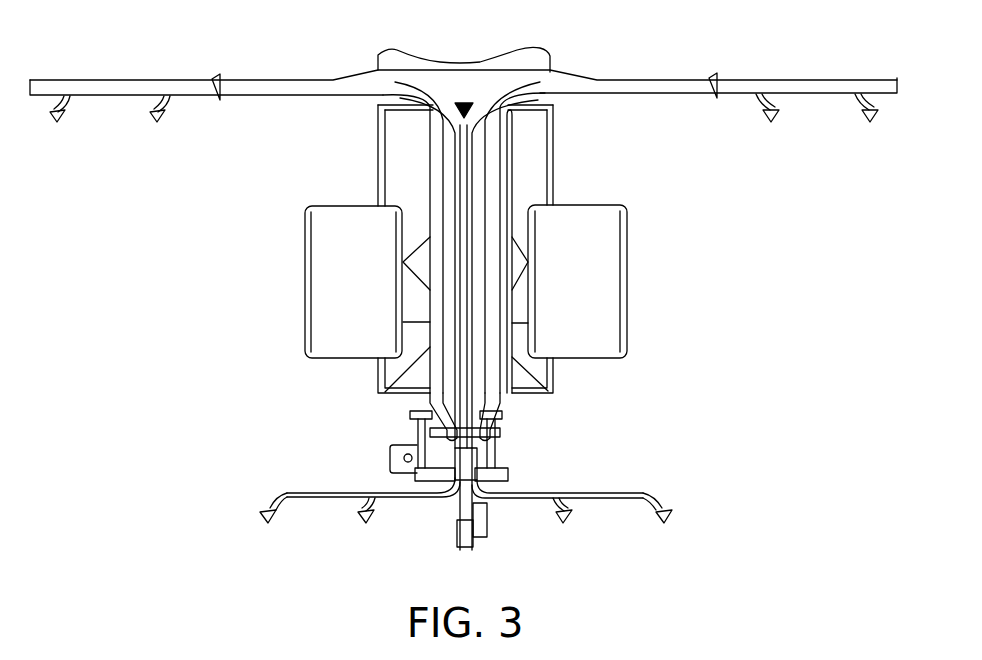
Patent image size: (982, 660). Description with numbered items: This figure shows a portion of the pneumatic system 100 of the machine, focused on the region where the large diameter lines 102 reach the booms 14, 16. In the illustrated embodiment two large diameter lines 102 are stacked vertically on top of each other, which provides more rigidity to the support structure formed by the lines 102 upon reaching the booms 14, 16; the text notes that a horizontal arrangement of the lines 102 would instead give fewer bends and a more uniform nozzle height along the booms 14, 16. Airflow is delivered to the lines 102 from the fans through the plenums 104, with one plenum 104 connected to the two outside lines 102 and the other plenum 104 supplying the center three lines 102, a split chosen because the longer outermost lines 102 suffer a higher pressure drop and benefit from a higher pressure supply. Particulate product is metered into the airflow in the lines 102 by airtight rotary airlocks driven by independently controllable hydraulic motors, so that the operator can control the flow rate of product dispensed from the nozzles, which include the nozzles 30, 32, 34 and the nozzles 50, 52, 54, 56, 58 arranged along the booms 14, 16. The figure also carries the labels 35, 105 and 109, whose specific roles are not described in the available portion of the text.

The boom 14 is at (668, 70).
The boom 16 is at (347, 70).
The nozzle 30 is at (870, 122).
The nozzle 32 is at (771, 122).
The nozzle 34 is at (155, 122).
The flow port 35 is at (55, 122).
The nozzle 50 is at (662, 524).
The nozzle 52 is at (562, 524).
The nozzle 54 is at (458, 528).
The nozzle 56 is at (364, 524).
The nozzle 58 is at (265, 524).
The pneumatic system 100 is at (366, 397).
The line 102 is at (453, 200).
The plenum 104 is at (478, 466).
The coil 105 is at (507, 294).
The outlet tube 109 is at (472, 397).